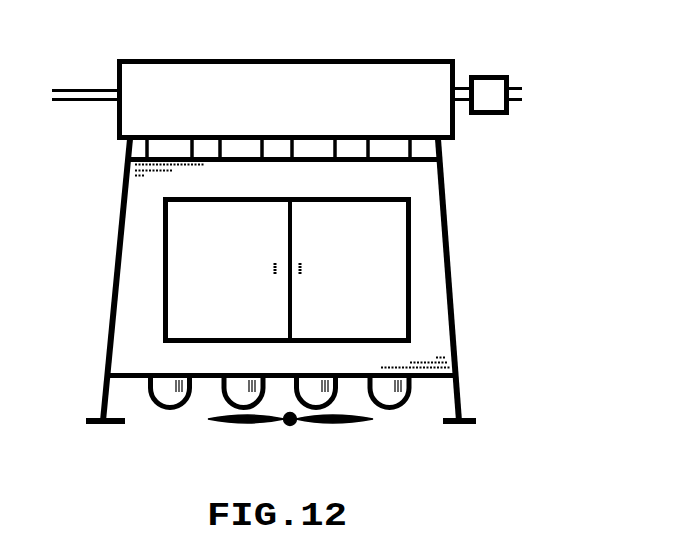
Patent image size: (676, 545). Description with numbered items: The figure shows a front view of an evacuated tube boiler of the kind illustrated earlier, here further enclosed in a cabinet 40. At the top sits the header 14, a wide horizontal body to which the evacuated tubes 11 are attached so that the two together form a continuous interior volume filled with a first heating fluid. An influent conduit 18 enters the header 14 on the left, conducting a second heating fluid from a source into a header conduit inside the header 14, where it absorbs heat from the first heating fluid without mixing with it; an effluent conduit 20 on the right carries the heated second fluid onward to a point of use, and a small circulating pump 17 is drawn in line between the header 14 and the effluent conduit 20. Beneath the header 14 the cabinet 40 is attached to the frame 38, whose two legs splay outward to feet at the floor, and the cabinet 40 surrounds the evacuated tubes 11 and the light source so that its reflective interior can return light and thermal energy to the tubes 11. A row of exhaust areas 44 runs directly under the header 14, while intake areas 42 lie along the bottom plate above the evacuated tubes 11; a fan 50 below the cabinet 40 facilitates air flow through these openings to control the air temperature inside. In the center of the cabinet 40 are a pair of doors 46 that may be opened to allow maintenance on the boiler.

The evacuated tubes 11 is at (152, 390).
The header 14 is at (256, 58).
The circulating pump 17 is at (490, 74).
The influent conduit 18 is at (72, 87).
The effluent conduit 20 is at (520, 102).
The frame 38 is at (445, 182).
The cabinet 40 is at (145, 229).
The intake areas 42 is at (432, 388).
The exhaust areas 44 is at (130, 145).
The doors 46 is at (190, 270).
The fans 50 is at (370, 425).